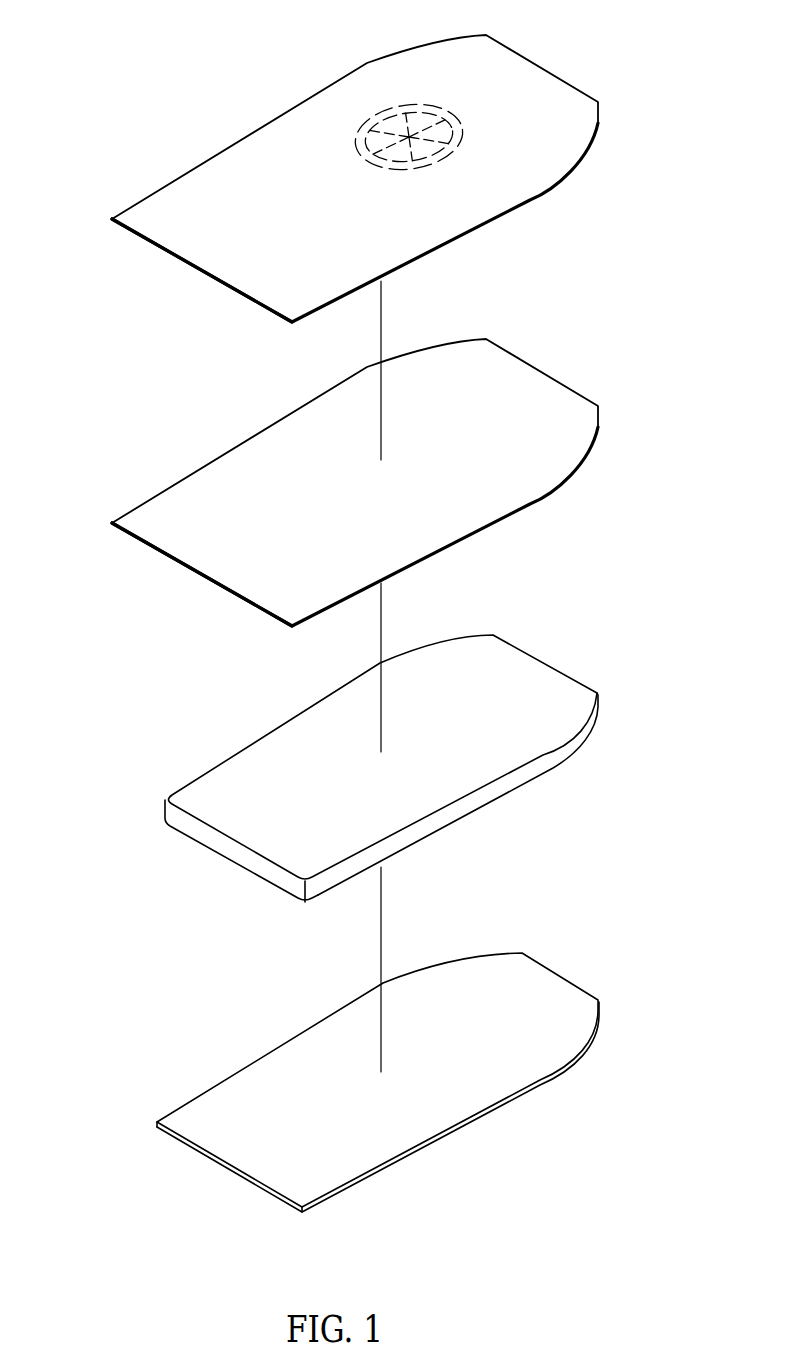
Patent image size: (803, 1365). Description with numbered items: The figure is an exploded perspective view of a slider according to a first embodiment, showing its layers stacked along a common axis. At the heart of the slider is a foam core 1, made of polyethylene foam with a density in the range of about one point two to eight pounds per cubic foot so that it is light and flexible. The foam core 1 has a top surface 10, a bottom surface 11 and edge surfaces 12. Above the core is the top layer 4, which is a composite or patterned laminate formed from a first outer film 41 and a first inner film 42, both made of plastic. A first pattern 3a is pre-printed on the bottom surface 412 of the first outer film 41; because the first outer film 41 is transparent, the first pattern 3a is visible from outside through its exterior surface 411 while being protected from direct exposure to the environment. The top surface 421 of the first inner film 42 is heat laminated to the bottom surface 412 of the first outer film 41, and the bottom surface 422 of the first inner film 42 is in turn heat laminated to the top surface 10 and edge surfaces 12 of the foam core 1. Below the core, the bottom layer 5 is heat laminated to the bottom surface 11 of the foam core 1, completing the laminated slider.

The foam core 1 is at (385, 756).
The top surface 10 is at (488, 762).
The bottom surface 11 is at (467, 820).
The edge surfaces 12 is at (207, 840).
The first pattern 3a is at (372, 117).
The top layer 4 is at (650, 200).
The first outer film 41 is at (352, 161).
The exterior surface 411 is at (197, 193).
The bottom surface 412 is at (183, 267).
The first inner film 42 is at (341, 468).
The top surface 421 is at (162, 517).
The bottom surface 422 is at (157, 547).
The bottom layer 5 is at (580, 965).